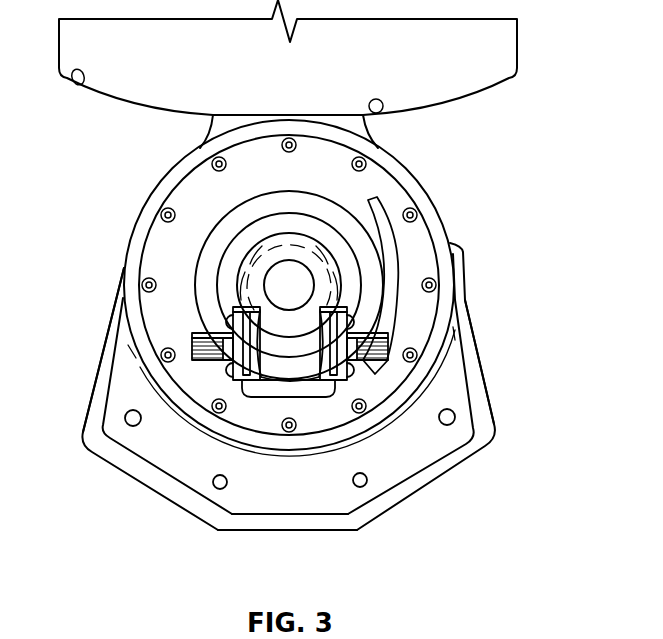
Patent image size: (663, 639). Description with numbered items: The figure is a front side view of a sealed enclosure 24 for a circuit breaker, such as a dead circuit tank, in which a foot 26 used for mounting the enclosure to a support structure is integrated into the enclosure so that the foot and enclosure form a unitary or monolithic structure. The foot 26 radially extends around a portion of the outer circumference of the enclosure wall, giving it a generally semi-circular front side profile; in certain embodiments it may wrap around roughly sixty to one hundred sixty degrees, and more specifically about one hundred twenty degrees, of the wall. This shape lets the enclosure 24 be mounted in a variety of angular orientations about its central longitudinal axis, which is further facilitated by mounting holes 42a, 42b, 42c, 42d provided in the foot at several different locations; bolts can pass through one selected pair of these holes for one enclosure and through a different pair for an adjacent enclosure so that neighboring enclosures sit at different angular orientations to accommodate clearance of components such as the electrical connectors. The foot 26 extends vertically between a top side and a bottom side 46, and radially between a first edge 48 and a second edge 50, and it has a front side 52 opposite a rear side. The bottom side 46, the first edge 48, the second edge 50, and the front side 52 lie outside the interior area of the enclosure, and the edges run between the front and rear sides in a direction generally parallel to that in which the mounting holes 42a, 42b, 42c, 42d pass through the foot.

The enclosure 24 is at (437, 203).
The foot 26 is at (448, 392).
The mounting hole 42a is at (132, 426).
The mounting hole 42b is at (219, 489).
The mounting hole 42c is at (362, 487).
The mounting hole 42d is at (449, 425).
The bottom side 46 is at (278, 530).
The first edge 48 is at (93, 398).
The second edge 50 is at (495, 402).
The front side 52 is at (301, 497).